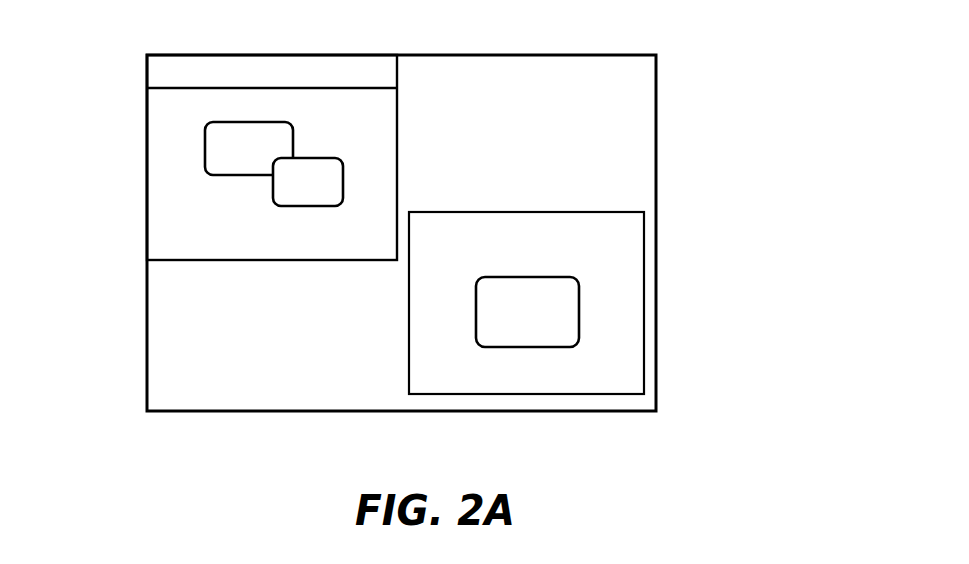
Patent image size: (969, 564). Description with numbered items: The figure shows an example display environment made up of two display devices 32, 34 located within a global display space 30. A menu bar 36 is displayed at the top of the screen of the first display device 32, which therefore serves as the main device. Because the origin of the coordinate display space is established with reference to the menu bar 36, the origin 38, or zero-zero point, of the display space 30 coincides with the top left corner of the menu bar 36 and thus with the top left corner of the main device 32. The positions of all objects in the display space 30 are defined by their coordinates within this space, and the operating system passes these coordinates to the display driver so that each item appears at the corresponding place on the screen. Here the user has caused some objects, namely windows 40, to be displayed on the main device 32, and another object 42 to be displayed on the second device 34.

The display space 30 is at (634, 105).
The display device 32 is at (271, 130).
The display device 34 is at (625, 232).
The menu bar 36 is at (350, 67).
The origin 38 is at (398, 236).
The windows 40 is at (290, 192).
The object 42 is at (532, 335).